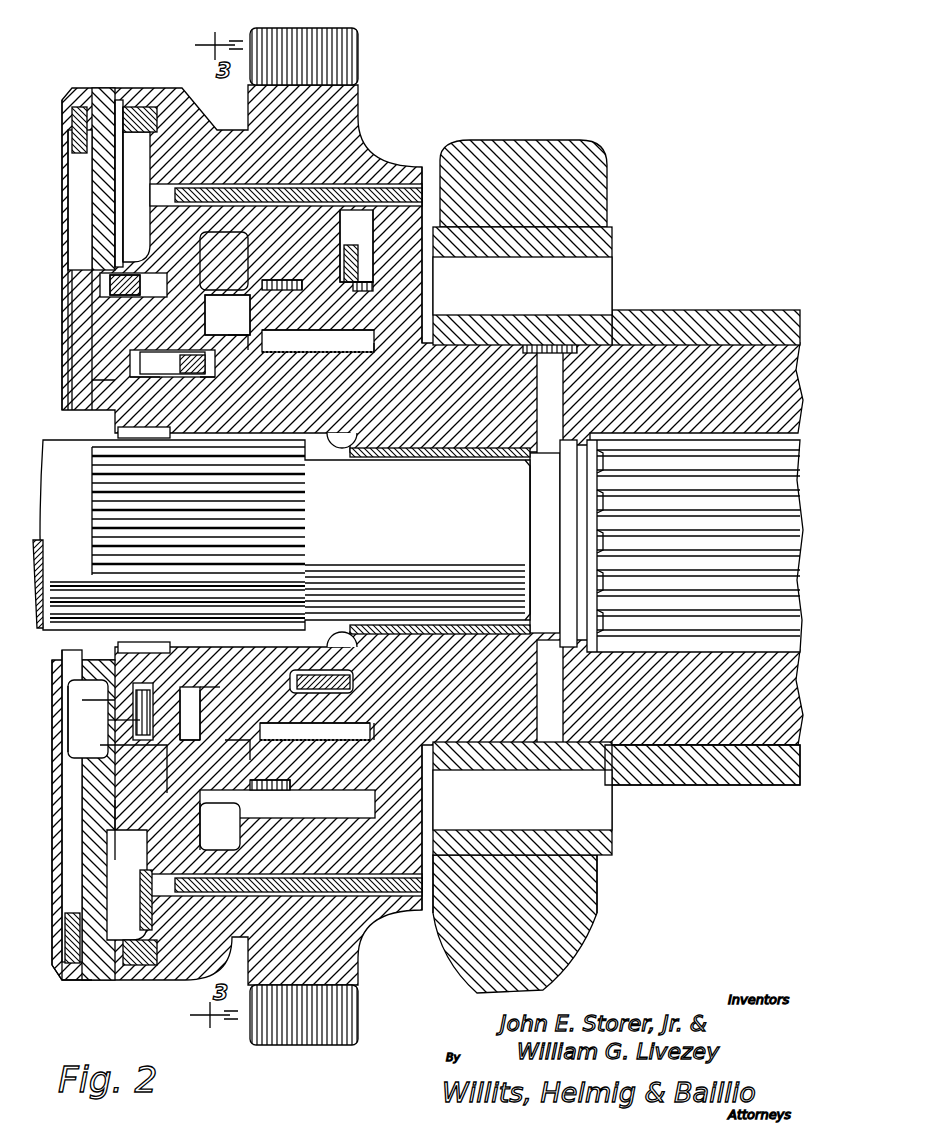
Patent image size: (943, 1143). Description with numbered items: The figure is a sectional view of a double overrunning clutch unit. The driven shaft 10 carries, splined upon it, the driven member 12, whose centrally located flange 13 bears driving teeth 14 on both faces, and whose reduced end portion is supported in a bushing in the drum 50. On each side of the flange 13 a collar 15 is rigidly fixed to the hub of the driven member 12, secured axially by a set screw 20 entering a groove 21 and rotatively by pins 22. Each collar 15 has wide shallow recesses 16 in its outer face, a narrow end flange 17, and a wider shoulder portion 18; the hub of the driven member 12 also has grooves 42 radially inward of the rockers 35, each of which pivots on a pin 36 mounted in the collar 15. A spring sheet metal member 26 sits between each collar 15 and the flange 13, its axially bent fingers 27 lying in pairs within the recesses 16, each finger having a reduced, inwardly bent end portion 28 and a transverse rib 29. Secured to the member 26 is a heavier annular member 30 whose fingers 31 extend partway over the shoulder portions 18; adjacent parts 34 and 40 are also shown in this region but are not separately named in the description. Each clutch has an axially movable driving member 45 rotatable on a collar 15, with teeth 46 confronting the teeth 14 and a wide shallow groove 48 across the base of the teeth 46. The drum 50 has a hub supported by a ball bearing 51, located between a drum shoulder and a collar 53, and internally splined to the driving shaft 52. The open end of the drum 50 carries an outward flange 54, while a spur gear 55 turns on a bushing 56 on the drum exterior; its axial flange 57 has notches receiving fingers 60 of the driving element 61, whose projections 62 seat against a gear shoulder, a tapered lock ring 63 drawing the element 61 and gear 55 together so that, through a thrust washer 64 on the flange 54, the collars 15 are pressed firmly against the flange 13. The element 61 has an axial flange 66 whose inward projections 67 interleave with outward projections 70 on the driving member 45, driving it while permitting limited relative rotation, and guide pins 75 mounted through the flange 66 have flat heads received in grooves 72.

The driven shaft 10 is at (62, 640).
The driven member 12 is at (90, 415).
The flange 13 is at (192, 361).
The driving teeth 14 is at (282, 763).
The collar 15 is at (120, 345).
The recesses 16 is at (387, 380).
The flange 17 is at (230, 345).
The shoulder portion 18 is at (241, 748).
The set screw 20 is at (140, 720).
The groove 21 is at (90, 390).
The pins 22 is at (332, 675).
The spring sheet metal member 26 is at (245, 352).
The fingers 27 is at (347, 400).
The reduced width portion 28 is at (378, 350).
The rib 29 is at (350, 418).
The annular member 30 is at (288, 346).
The fingers 31 is at (133, 523).
The washer 34 is at (222, 668).
The rocker 35 is at (200, 385).
The pin 36 is at (165, 382).
The piston 40 is at (290, 330).
The grooves 42 is at (150, 683).
The driving member 45 is at (105, 310).
The teeth 46 is at (262, 283).
The groove 48 is at (110, 330).
The drum 50 is at (362, 955).
The ball bearing 51 is at (583, 845).
The driving shaft 52 is at (787, 512).
The collar 53 is at (693, 775).
The flange 54 is at (130, 183).
The spur gear 55 is at (360, 76).
The bushing 56 is at (393, 200).
The flange 57 is at (127, 978).
The fingers 60 is at (92, 980).
The driving element 61 is at (108, 700).
The projections 62 is at (143, 128).
The lock ring 63 is at (68, 930).
The thrust washer 64 is at (143, 897).
The flange 66 is at (140, 810).
The projections 67 is at (278, 335).
The projections 70 is at (117, 797).
The grooves 72 is at (105, 283).
The guide pins 75 is at (125, 250).